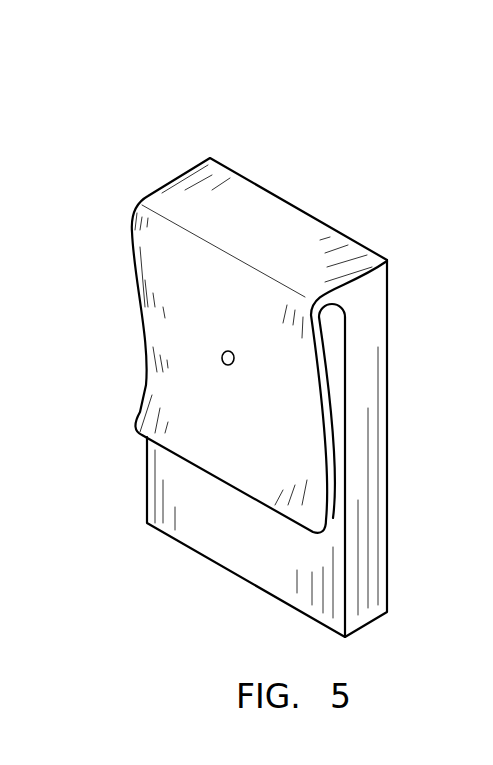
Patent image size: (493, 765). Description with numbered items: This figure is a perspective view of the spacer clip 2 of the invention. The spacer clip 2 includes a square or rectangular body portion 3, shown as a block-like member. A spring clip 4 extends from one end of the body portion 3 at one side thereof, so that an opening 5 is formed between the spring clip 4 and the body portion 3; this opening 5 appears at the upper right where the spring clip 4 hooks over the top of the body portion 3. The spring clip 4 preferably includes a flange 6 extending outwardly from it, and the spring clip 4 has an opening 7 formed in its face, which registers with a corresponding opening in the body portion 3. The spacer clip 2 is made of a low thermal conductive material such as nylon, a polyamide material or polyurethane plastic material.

The spacer clip 2 is at (303, 202).
The body portion 3 is at (373, 348).
The spring clip 4 is at (190, 285).
The opening 5 is at (335, 332).
The flange 6 is at (248, 470).
The opening 7 is at (222, 352).